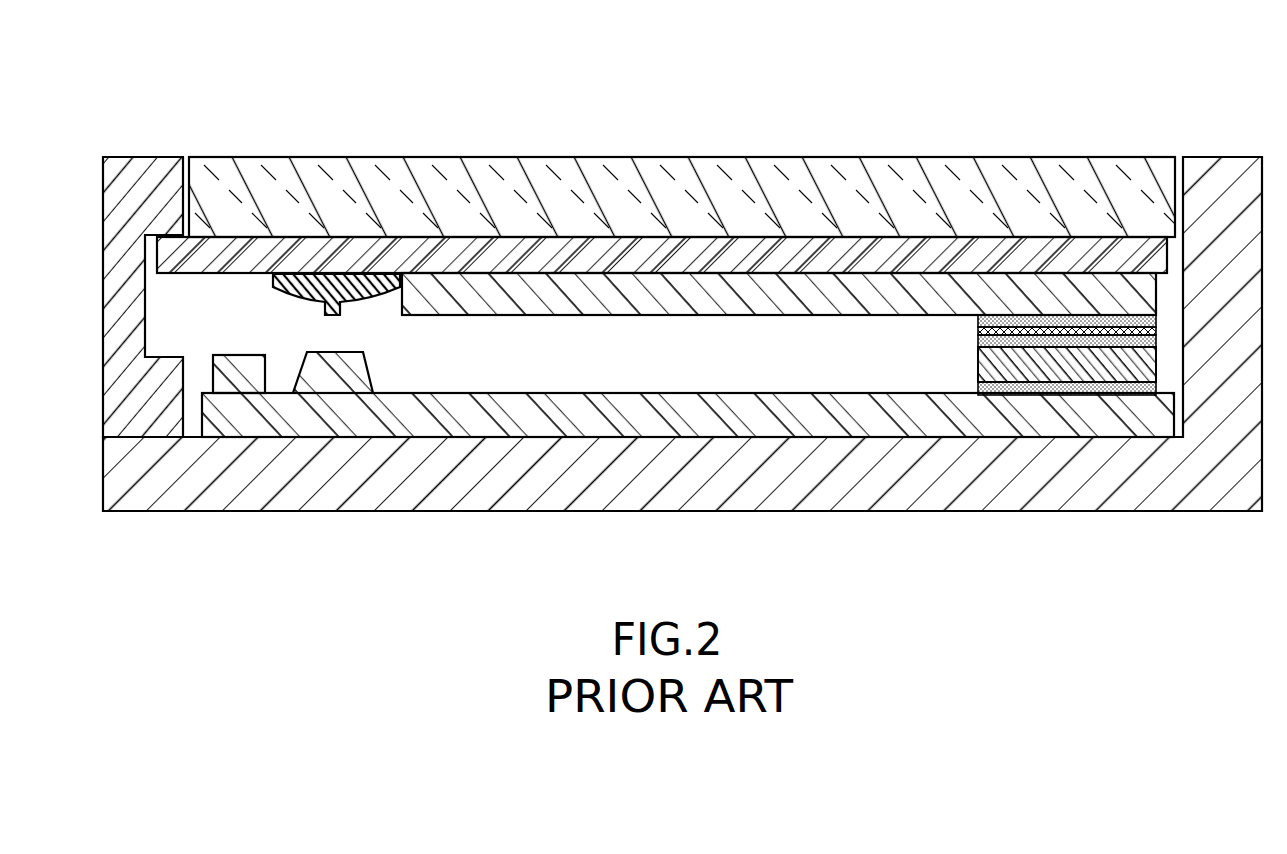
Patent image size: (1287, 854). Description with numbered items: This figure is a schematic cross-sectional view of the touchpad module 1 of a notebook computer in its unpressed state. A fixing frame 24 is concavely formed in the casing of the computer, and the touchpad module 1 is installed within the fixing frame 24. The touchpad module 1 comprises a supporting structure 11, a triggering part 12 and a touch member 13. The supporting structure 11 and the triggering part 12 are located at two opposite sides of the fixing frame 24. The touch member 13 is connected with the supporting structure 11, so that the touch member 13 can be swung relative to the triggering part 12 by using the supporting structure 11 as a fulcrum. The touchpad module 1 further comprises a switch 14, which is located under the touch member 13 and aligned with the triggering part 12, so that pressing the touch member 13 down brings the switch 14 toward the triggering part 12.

The touchpad module 1 is at (978, 75).
The supporting structure 11 is at (1067, 367).
The triggering part 12 is at (340, 371).
The touch member 13 is at (1002, 250).
The switch 14 is at (332, 275).
The fixing frame 24 is at (143, 173).